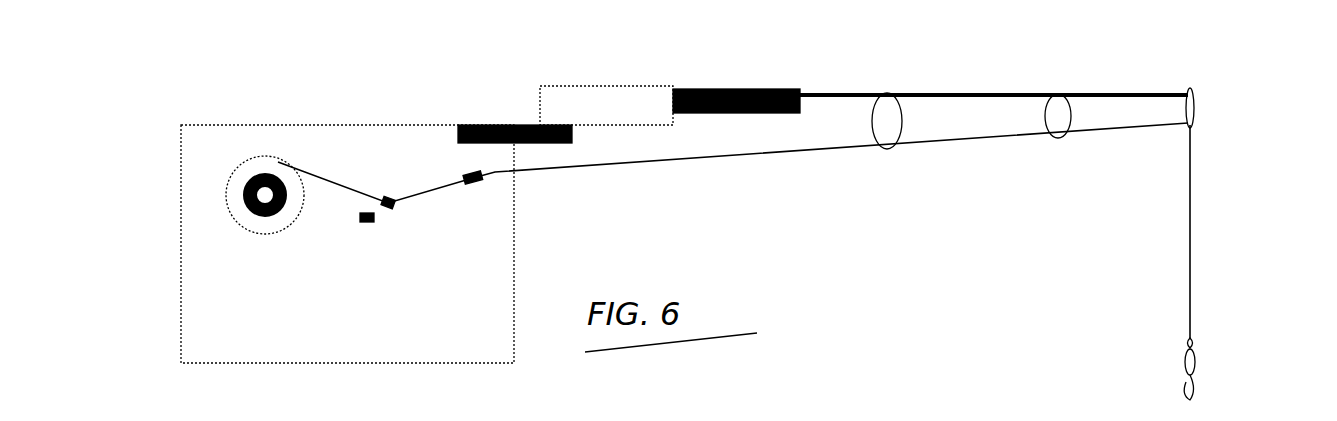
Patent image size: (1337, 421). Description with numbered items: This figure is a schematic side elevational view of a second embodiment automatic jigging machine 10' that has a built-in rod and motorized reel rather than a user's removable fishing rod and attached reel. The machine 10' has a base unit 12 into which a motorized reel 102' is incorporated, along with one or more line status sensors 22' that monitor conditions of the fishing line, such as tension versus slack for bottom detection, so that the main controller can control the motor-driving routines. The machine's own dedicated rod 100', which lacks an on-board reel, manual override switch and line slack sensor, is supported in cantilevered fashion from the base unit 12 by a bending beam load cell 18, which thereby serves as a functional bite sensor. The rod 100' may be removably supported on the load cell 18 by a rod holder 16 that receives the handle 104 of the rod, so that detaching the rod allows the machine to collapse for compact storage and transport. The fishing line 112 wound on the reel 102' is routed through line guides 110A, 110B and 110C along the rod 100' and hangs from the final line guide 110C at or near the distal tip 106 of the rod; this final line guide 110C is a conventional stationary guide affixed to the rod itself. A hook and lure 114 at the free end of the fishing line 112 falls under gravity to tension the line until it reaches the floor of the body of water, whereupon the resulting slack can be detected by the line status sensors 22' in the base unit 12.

The automatic jigging machine 10' is at (214, 79).
The base unit 12 is at (240, 348).
The rod holder 16 is at (610, 100).
The bending beam load cell 18 is at (482, 128).
The line status sensors 22' is at (415, 246).
The dedicated rod 100' is at (994, 65).
The motorized reel 102' is at (250, 233).
The handle 104 is at (753, 90).
The distal tip 106 is at (1200, 85).
The line guide 110A is at (885, 150).
The line guide 110B is at (1060, 134).
The final line guide 110C is at (1195, 108).
The fishing line 112 is at (750, 155).
The hook and lure 114 is at (1212, 368).